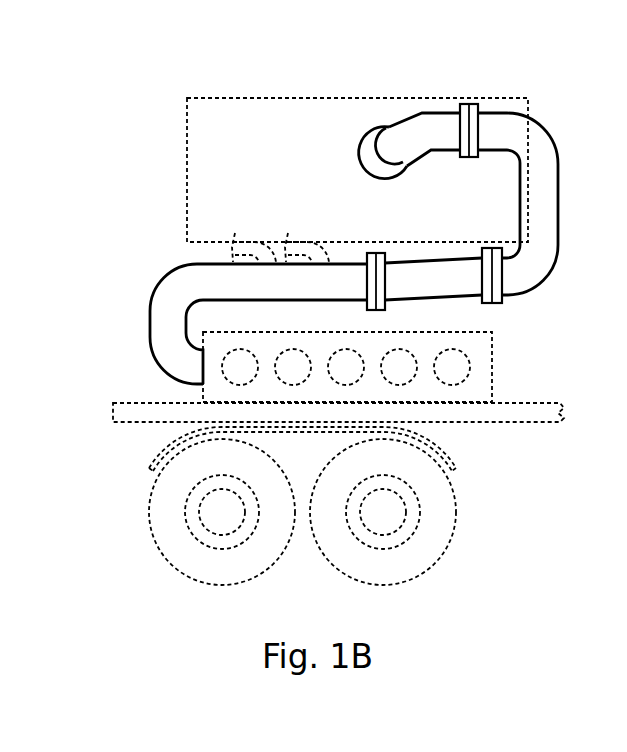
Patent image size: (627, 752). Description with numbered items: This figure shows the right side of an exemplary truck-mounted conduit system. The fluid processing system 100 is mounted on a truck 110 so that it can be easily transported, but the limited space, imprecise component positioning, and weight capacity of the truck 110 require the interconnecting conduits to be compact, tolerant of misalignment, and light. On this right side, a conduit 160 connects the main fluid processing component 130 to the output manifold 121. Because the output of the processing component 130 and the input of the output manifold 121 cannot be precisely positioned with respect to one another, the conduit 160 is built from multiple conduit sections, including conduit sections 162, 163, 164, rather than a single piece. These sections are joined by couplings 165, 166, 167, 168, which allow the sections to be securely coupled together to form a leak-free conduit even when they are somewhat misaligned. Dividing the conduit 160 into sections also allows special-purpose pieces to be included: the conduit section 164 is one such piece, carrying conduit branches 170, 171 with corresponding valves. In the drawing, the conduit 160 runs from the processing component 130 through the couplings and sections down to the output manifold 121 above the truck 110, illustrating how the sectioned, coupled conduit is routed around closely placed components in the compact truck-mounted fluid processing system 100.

The fluid processing system 100 is at (101, 93).
The truck 110 is at (101, 408).
The output manifold 121 is at (493, 380).
The main fluid processing component 130 is at (434, 112).
The conduit 160 is at (560, 128).
The conduit section 162 is at (558, 196).
The conduit section 163 is at (442, 257).
The conduit section 164 is at (164, 283).
The coupling 165 is at (357, 151).
The coupling 166 is at (469, 104).
The coupling 167 is at (492, 303).
The coupling 168 is at (378, 253).
The conduit branch 170 is at (250, 240).
The conduit branch 171 is at (304, 240).